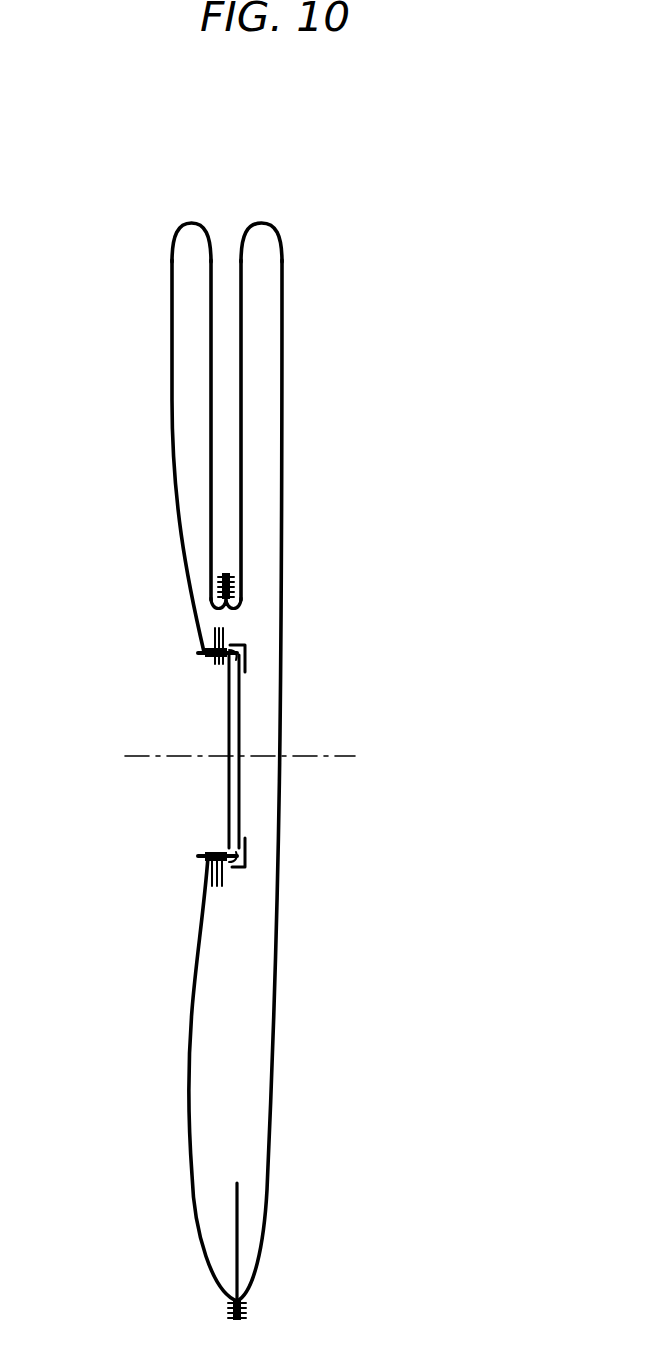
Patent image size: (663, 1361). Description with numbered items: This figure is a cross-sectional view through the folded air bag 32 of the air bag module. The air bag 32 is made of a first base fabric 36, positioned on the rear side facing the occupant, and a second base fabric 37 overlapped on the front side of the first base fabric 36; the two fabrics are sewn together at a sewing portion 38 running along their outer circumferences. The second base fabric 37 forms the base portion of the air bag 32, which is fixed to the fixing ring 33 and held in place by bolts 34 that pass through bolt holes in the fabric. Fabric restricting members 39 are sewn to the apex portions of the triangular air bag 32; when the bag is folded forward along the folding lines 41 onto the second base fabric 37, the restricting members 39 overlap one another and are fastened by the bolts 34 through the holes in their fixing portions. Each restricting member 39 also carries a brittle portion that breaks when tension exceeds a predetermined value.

The air bag 32 is at (322, 377).
The fixing ring 33 is at (229, 777).
The bolts 34 is at (202, 655).
The first base fabric 36 is at (283, 477).
The second base fabric 37 is at (172, 417).
The sewing portion 38 is at (211, 575).
The fabric restricting members 39 is at (227, 626).
The folding lines 41 is at (192, 223).